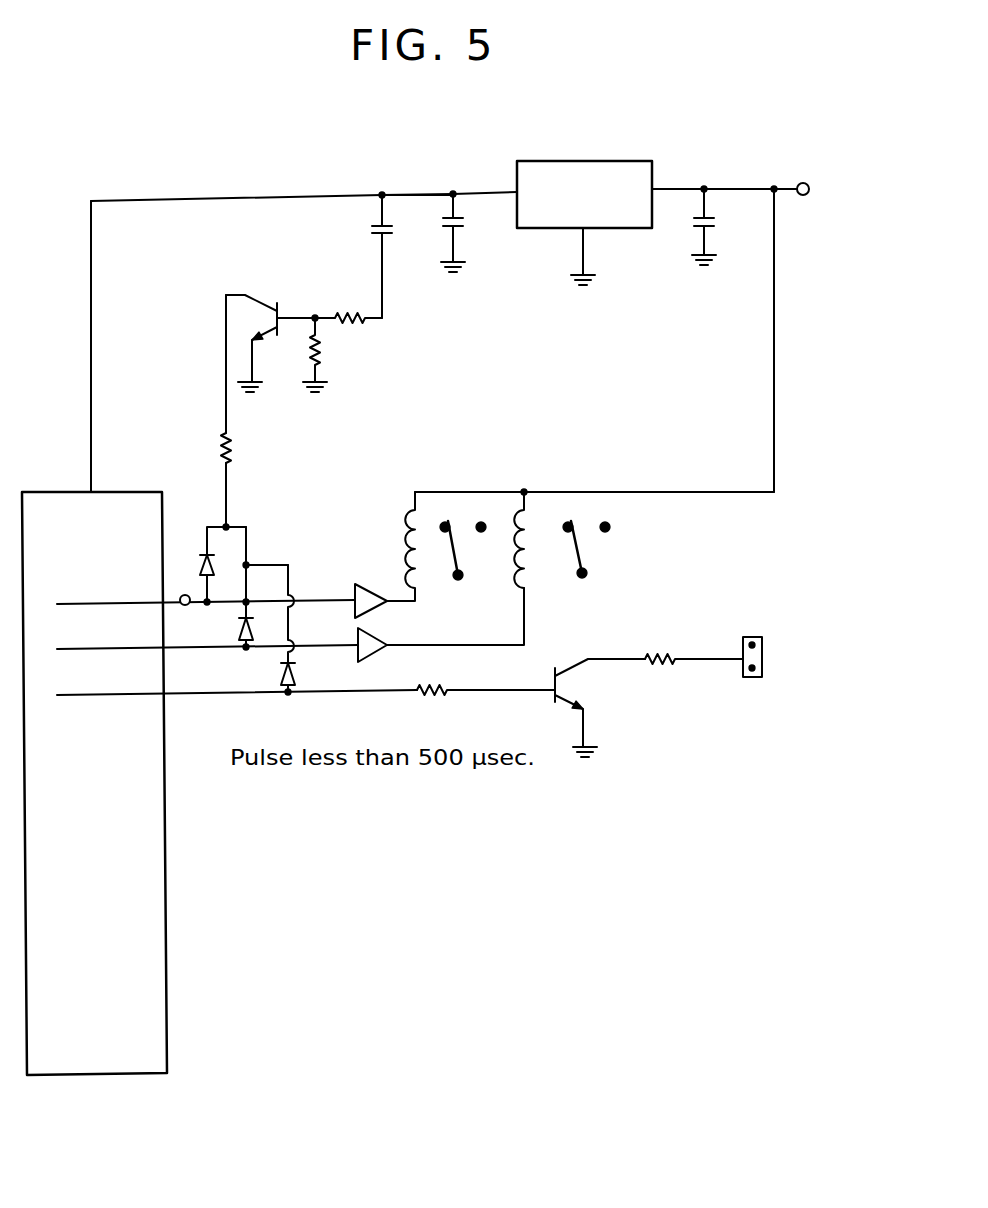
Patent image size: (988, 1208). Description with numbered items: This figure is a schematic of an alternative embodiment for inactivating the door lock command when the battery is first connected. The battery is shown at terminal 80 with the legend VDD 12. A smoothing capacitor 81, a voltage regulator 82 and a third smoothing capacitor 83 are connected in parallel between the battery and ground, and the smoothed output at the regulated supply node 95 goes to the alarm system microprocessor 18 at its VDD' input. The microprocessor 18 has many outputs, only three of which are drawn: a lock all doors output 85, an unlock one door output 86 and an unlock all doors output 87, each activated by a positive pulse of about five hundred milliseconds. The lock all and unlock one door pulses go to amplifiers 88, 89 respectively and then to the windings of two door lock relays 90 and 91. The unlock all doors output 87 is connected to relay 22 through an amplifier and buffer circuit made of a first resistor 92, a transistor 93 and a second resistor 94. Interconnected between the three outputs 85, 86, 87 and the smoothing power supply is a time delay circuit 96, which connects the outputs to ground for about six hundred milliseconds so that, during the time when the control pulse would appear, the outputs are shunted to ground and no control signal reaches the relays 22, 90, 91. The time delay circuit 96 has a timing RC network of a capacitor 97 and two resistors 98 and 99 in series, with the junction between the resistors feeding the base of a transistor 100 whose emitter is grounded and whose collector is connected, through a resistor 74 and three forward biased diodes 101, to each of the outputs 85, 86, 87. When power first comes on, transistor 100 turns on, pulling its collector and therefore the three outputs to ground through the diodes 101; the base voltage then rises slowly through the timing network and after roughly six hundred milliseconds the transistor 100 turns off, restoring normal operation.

The VDD supply terminal 12 is at (832, 199).
The alarm system microprocessor 18 is at (107, 553).
The relay 22 is at (755, 681).
The resistor 74 is at (253, 450).
The terminal 80 is at (803, 182).
The smoothing capacitor 81 is at (697, 230).
The voltage regulator 82 is at (628, 232).
The third smoothing capacitor 83 is at (447, 234).
The lock all doors output 85 is at (186, 606).
The unlock one door output 86 is at (188, 652).
The unlock all doors output 87 is at (190, 698).
The amplifier 88 is at (370, 586).
The amplifier 89 is at (383, 641).
The door lock relay 90 is at (466, 484).
The door lock relay 91 is at (592, 484).
The first resistor 92 is at (435, 693).
The transistor 93 is at (568, 681).
The second resistor 94 is at (660, 655).
The regulated supply node 95 is at (418, 190).
The time delay circuit 96 is at (384, 354).
The capacitor 97 is at (376, 238).
The resistor 98 is at (350, 312).
The resistor 99 is at (320, 345).
The transistor 100 is at (293, 280).
The forward biased diodes 101 is at (204, 556).